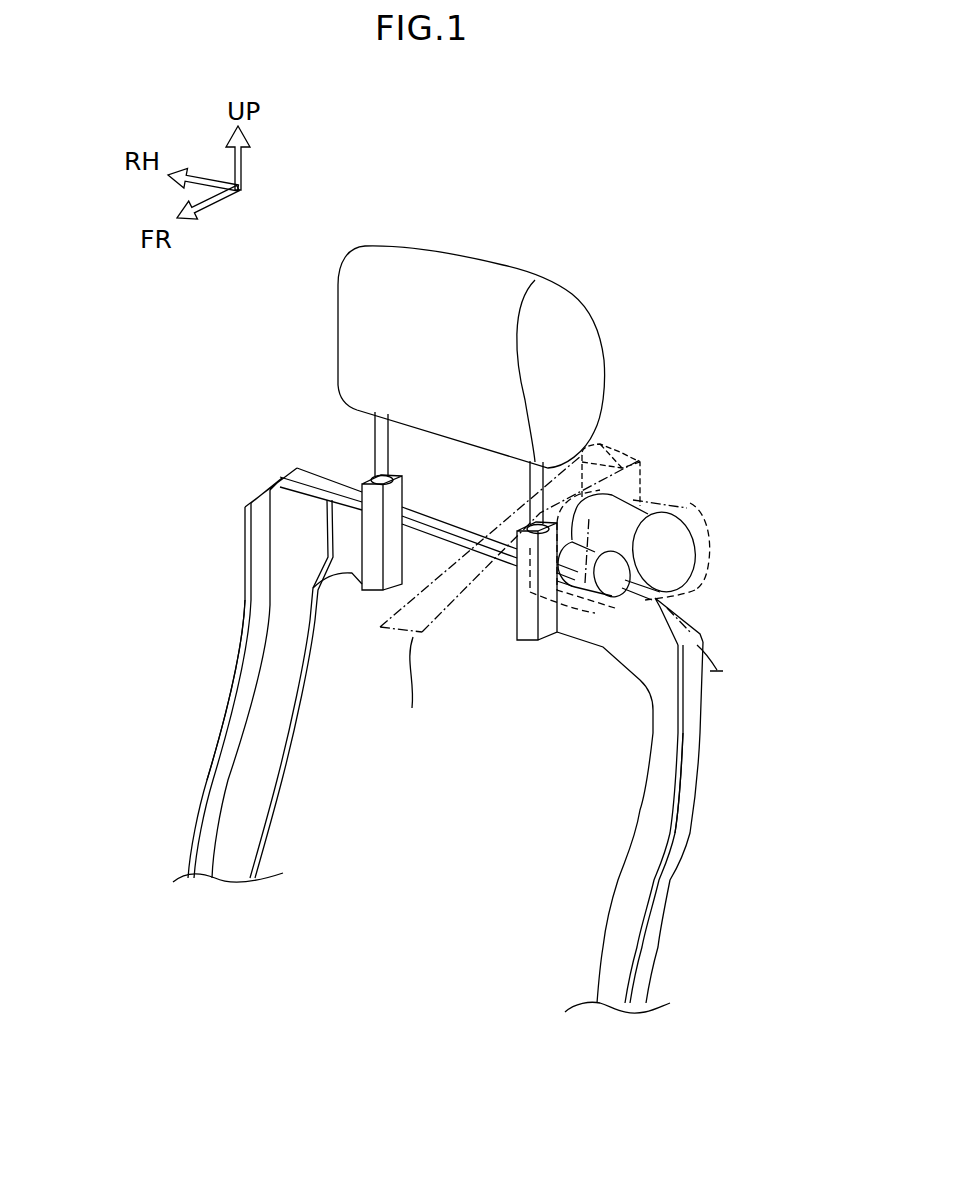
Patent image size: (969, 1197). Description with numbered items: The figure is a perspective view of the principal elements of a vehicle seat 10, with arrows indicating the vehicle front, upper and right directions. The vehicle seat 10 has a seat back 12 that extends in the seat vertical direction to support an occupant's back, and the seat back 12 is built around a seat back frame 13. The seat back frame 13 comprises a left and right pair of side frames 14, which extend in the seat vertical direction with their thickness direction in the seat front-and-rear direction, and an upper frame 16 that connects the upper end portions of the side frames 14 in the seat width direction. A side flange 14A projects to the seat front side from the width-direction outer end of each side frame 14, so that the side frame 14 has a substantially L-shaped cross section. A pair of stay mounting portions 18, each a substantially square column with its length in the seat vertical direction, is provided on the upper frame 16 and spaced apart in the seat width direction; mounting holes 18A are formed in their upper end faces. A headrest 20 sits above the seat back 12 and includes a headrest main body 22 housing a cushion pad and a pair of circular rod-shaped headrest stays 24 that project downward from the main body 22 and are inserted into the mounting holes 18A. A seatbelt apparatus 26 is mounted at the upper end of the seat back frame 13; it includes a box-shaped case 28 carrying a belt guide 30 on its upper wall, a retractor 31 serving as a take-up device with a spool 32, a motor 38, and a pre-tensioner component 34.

The vehicle seat 10 is at (188, 412).
The seat back 12 is at (441, 740).
The seat back frame 13 is at (213, 697).
The side frame 14 is at (283, 763).
The side flange 14A is at (200, 792).
The upper frame 16 is at (457, 608).
The stay mounting portion 18 is at (367, 594).
The mounting hole 18A is at (390, 478).
The headrest 20 is at (596, 280).
The headrest main body 22 is at (577, 358).
The headrest stay 24 is at (528, 478).
The seatbelt apparatus 26 is at (705, 468).
The case 28 is at (712, 560).
The belt guide 30 is at (620, 455).
The retractor 31 is at (713, 528).
The spool 32 is at (683, 530).
The pre-tensioner component 34 is at (700, 588).
The motor 38 is at (613, 583).